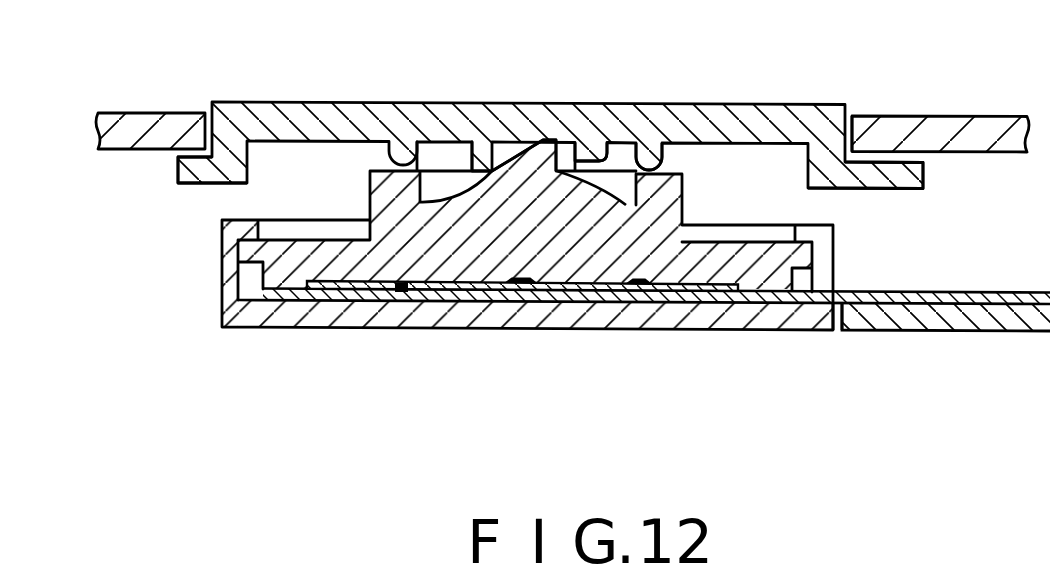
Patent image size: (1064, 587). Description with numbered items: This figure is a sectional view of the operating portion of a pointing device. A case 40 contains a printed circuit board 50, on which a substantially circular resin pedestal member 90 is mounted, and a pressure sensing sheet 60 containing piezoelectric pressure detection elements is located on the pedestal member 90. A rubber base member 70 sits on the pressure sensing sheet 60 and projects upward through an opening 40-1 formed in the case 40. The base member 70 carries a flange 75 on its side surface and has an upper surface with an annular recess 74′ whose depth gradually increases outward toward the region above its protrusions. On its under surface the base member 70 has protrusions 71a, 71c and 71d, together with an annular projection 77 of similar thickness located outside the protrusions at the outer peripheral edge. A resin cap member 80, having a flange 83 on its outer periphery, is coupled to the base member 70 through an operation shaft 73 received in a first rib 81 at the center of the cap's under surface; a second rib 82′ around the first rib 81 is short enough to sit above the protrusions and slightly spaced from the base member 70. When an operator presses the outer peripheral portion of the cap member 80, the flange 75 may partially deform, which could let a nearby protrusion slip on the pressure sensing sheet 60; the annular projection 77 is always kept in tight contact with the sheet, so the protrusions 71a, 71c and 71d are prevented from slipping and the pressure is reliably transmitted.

The cap member 80 is at (405, 102).
The operation shaft 73 is at (537, 139).
The first rib 81 is at (571, 171).
The second rib 82′ is at (673, 158).
The opening 40-1 is at (853, 117).
The case 40 is at (950, 118).
The flange 83 is at (192, 184).
The annular recess 74′ is at (623, 188).
The flange 75 is at (800, 257).
The pressure sensing sheet 60 is at (955, 292).
The base member 70 is at (347, 283).
The protrusion 71d is at (403, 292).
The protrusion 71a is at (520, 289).
The protrusion 71c is at (645, 289).
The annular projection 77 is at (753, 285).
The pedestal member 90 is at (838, 318).
The printed circuit board 50 is at (895, 325).